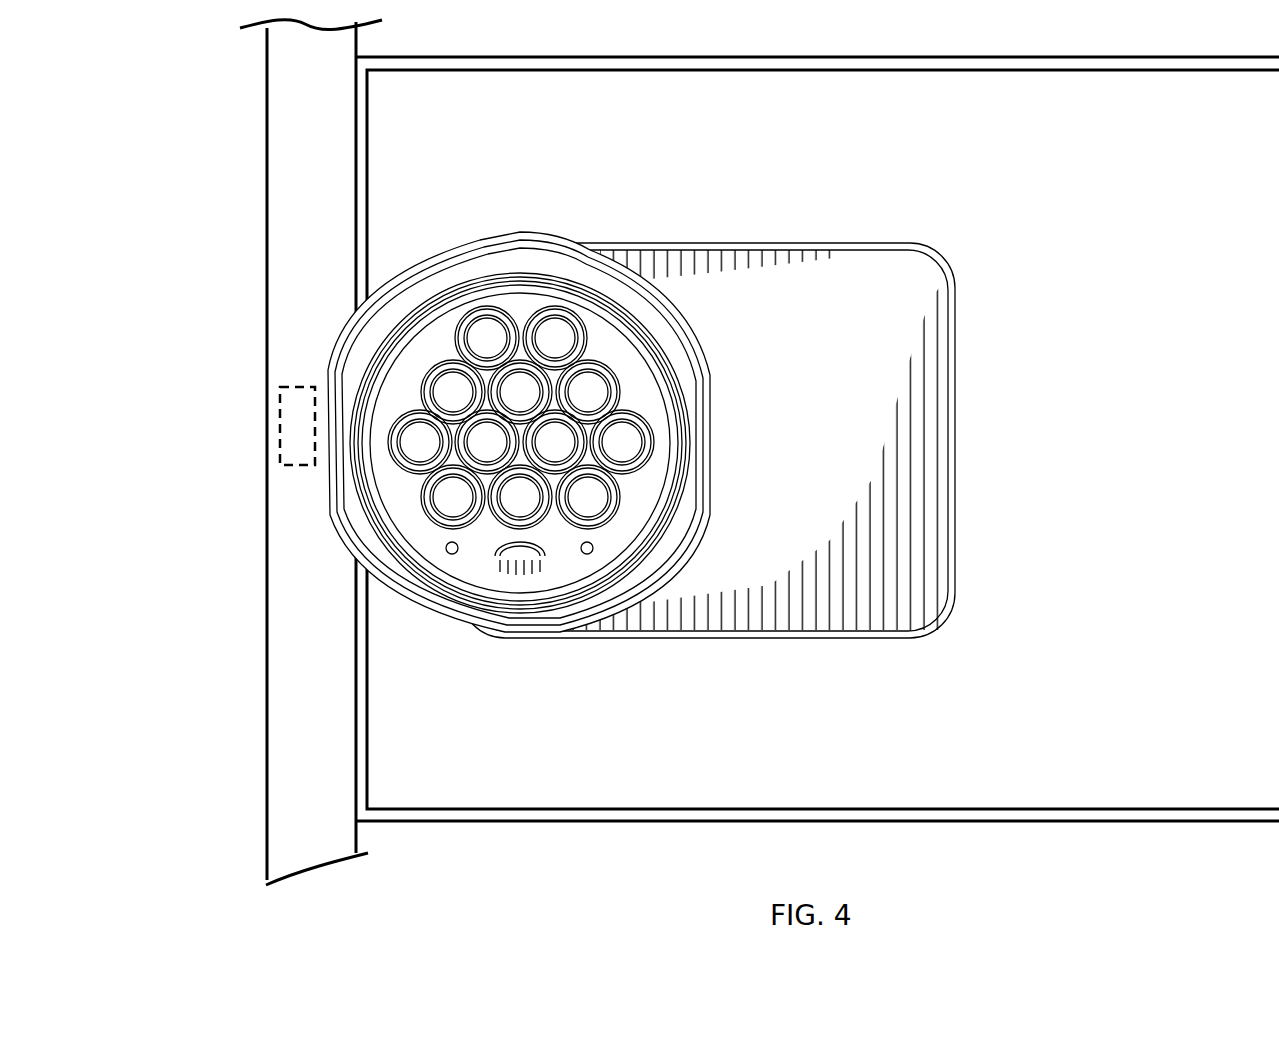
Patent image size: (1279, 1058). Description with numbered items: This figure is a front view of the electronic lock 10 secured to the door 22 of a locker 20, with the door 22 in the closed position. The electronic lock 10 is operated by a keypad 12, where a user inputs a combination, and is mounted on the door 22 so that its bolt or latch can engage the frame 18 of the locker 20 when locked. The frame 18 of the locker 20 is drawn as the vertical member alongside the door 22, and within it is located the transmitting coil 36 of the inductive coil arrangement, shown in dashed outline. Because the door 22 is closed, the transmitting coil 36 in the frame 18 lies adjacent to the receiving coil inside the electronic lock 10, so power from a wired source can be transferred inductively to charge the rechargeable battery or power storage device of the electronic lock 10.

The electronic lock 10 is at (812, 228).
The keypad 12 is at (432, 502).
The frame 18 is at (308, 228).
The locker 20 is at (240, 140).
The door 22 is at (1122, 274).
The transmitting coil 36 is at (268, 450).